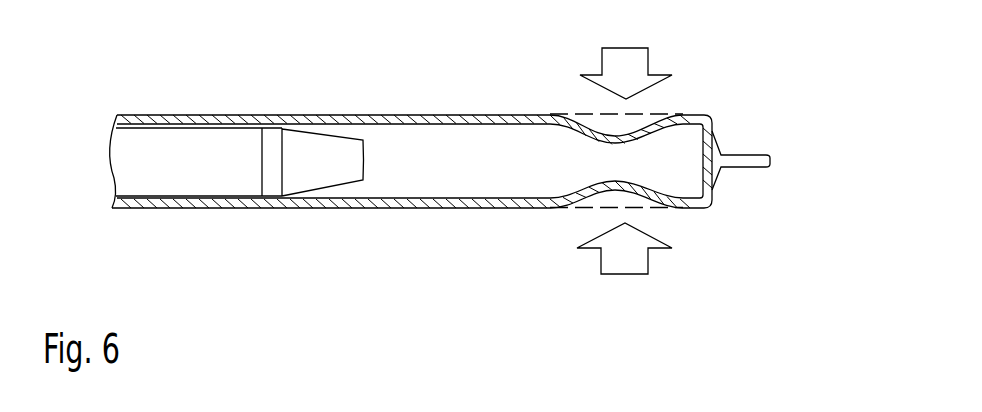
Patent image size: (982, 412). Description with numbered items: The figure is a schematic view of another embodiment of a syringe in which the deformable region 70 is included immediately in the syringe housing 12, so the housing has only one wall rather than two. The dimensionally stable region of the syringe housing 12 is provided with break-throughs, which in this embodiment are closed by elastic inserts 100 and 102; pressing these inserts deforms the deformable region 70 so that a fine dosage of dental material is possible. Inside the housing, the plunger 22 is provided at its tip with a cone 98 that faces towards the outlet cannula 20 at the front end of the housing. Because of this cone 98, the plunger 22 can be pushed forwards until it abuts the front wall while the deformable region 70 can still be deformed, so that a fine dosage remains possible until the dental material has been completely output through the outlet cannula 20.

The syringe housing 12 is at (386, 120).
The plunger 22 is at (187, 152).
The cone 98 is at (317, 168).
The outlet cannula 20 is at (745, 157).
The deformable region 70 is at (687, 89).
The elastic insert 100 is at (657, 210).
The elastic insert 102 is at (583, 113).